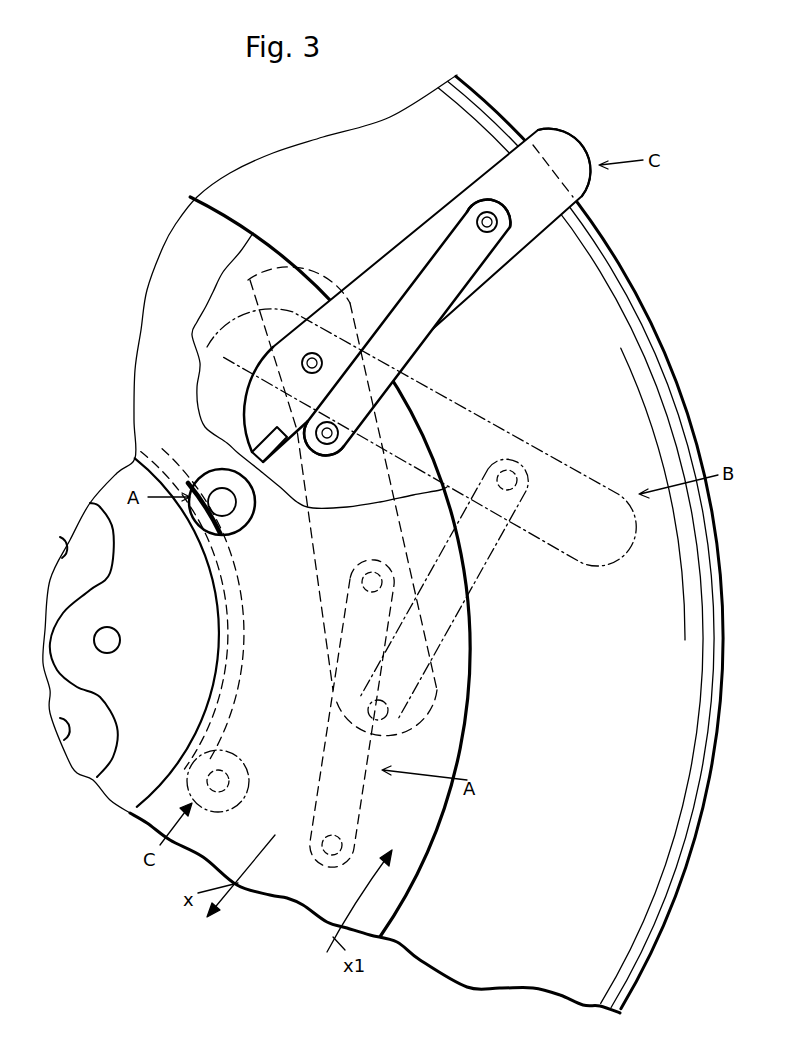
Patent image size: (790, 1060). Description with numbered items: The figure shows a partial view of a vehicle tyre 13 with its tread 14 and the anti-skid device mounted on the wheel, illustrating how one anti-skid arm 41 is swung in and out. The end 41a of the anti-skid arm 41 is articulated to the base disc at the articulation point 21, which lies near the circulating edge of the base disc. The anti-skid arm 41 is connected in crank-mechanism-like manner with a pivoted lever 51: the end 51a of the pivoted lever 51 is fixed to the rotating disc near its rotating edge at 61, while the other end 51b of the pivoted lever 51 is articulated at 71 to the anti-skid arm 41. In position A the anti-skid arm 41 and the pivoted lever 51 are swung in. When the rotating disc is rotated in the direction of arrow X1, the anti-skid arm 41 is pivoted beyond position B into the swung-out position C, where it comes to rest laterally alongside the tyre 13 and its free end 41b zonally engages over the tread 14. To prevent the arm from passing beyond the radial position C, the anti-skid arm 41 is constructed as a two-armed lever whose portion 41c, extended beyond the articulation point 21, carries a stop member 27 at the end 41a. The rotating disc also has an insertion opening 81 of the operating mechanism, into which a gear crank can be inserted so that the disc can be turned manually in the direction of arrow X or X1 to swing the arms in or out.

The tyre 13 is at (460, 95).
The tread 14 is at (500, 110).
The articulation point 21 is at (303, 358).
The stop member 27 is at (258, 445).
The anti-skid arm 41 is at (391, 252).
The end of anti-skid arm 41a is at (300, 340).
The free end of anti-skid arm 41b is at (578, 142).
The portion extended beyond articulation point 41c is at (258, 402).
The pivoted lever 51 is at (447, 297).
The end of pivoted lever 51a is at (353, 422).
The other end of pivoted lever 51b is at (477, 255).
The fixing point on rotating disc 61 is at (325, 445).
The articulation point on anti-skid arm 71 is at (497, 229).
The insertion opening 81 is at (229, 512).